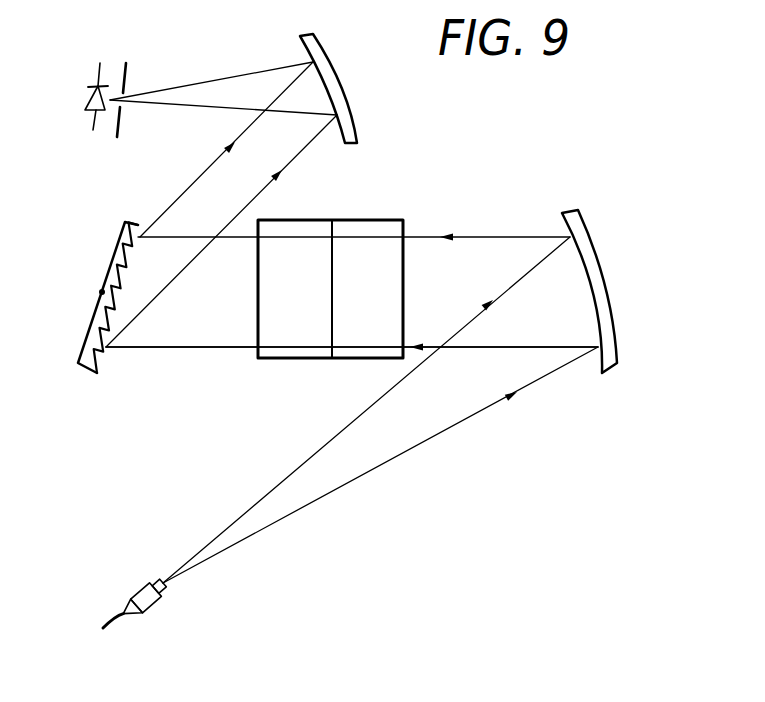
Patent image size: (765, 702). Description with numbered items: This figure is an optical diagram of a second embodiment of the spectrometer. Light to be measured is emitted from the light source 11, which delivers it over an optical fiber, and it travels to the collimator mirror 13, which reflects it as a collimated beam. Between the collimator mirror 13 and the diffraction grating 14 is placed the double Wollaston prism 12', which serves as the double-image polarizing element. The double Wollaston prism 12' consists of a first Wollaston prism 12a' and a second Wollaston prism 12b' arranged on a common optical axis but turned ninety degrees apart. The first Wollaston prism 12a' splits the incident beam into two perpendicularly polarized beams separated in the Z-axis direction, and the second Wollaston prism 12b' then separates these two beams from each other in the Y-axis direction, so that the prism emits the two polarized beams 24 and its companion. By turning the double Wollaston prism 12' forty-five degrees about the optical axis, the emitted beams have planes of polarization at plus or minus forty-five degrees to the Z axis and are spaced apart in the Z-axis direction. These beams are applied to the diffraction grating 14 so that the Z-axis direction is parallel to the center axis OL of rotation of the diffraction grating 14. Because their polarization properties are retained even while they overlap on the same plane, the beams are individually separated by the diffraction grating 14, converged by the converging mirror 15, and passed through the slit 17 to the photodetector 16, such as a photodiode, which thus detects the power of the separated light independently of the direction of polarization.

The light source 11 is at (150, 605).
The double Wollaston prism 12' is at (354, 244).
The first Wollaston prism 12a' is at (391, 264).
The second Wollaston prism 12b' is at (323, 264).
The collimator mirror 13 is at (618, 362).
The diffraction grating 14 is at (120, 233).
The converging mirror 15 is at (342, 95).
The photodetector 16 is at (83, 105).
The slit 17 is at (127, 92).
The polarized beam 24 is at (352, 326).
The center axis of rotation of the diffraction grating OL is at (102, 292).